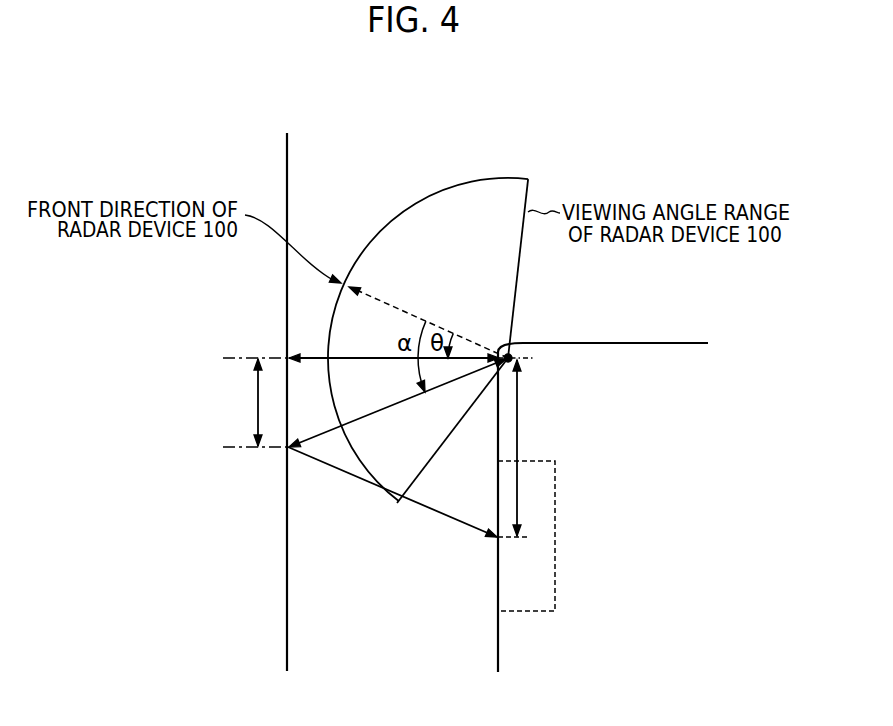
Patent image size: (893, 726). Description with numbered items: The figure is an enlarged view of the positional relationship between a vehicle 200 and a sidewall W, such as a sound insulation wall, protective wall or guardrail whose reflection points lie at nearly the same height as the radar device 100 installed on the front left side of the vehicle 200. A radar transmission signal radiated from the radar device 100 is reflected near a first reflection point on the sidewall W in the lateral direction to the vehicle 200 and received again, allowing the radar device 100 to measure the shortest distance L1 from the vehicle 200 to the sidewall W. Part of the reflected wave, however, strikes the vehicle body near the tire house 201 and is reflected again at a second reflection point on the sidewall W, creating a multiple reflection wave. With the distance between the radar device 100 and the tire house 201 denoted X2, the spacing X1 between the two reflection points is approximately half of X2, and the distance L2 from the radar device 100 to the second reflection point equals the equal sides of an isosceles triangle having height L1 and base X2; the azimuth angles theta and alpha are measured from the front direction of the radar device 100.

The radar device 100 is at (511, 354).
The vehicle 200 is at (650, 343).
The tire house 201 is at (555, 511).
The sidewall W is at (287, 160).
The distance L1 is at (394, 370).
The distance L2 is at (397, 403).
The distance X1 is at (243, 402).
The distance X2 is at (521, 448).